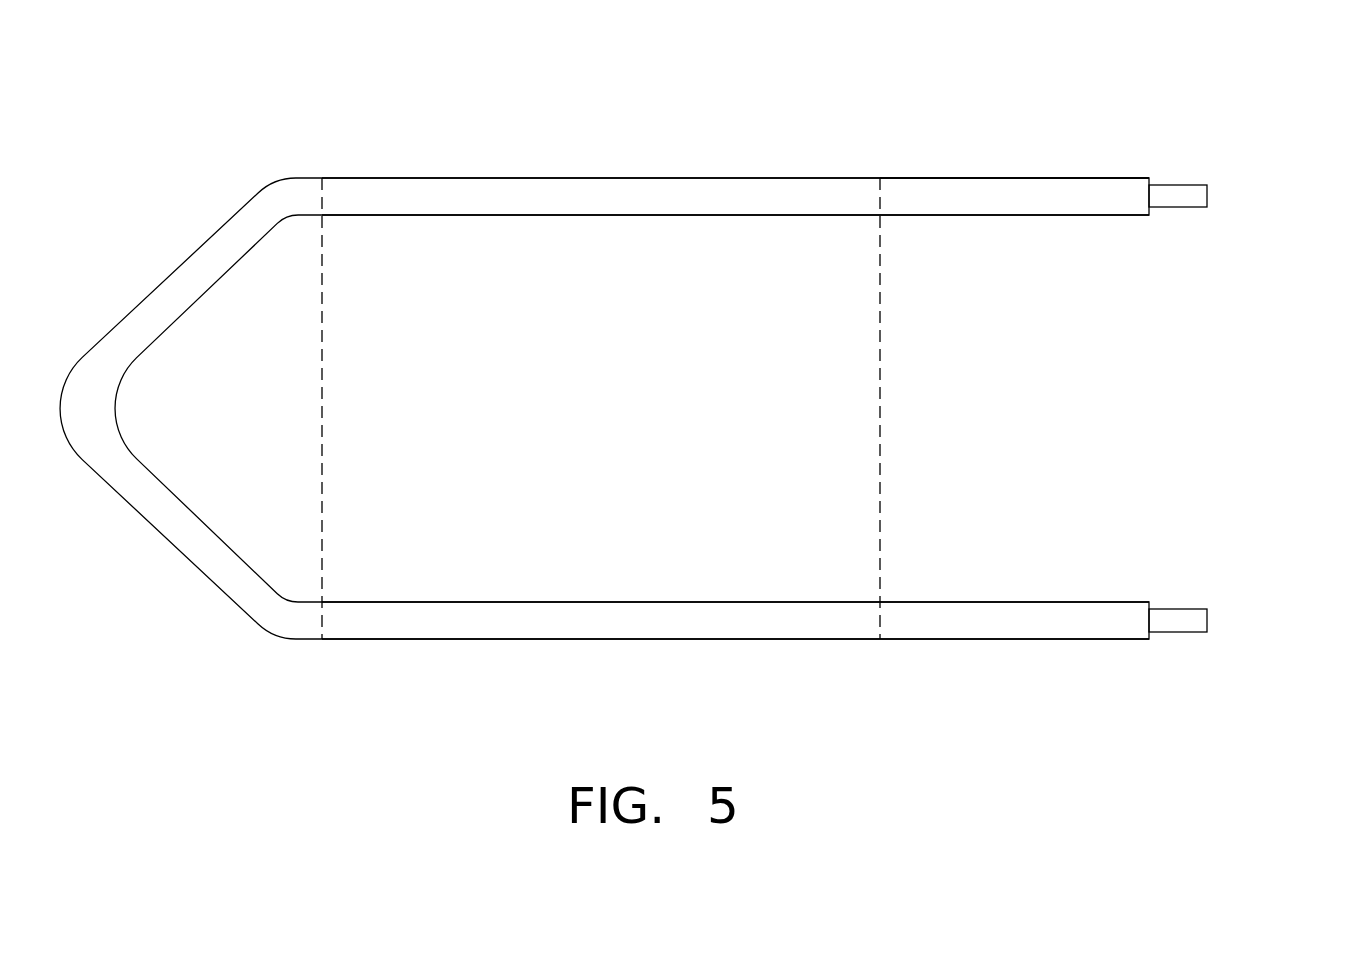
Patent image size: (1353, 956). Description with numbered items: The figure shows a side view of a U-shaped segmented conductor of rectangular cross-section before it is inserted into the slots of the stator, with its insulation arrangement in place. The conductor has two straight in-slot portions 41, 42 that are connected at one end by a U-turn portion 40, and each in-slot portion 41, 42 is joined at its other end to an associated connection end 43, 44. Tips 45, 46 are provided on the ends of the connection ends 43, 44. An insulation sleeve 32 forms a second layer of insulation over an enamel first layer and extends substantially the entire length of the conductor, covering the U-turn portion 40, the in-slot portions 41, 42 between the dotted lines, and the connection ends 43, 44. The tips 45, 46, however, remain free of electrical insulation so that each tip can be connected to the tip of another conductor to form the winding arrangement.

The insulation sleeve 32 is at (988, 195).
The U-turn portion 40 is at (147, 297).
The in-slot portion 41 is at (523, 198).
The in-slot portion 42 is at (362, 627).
The connection end 43 is at (1067, 175).
The connection end 44 is at (998, 622).
The tip 45 is at (1183, 195).
The tip 46 is at (1179, 620).